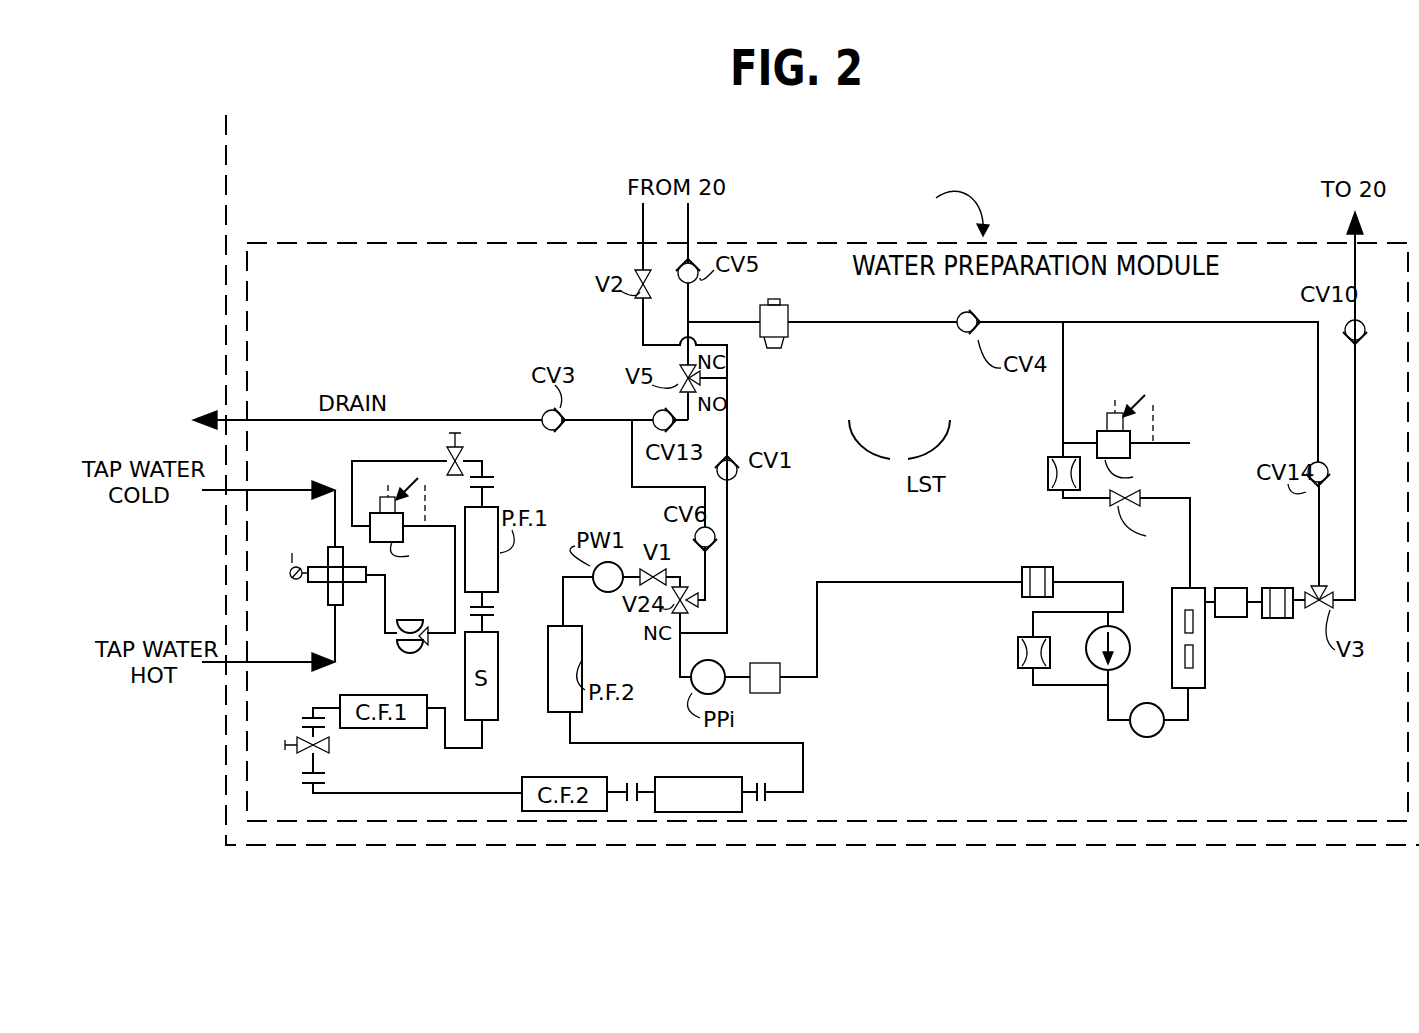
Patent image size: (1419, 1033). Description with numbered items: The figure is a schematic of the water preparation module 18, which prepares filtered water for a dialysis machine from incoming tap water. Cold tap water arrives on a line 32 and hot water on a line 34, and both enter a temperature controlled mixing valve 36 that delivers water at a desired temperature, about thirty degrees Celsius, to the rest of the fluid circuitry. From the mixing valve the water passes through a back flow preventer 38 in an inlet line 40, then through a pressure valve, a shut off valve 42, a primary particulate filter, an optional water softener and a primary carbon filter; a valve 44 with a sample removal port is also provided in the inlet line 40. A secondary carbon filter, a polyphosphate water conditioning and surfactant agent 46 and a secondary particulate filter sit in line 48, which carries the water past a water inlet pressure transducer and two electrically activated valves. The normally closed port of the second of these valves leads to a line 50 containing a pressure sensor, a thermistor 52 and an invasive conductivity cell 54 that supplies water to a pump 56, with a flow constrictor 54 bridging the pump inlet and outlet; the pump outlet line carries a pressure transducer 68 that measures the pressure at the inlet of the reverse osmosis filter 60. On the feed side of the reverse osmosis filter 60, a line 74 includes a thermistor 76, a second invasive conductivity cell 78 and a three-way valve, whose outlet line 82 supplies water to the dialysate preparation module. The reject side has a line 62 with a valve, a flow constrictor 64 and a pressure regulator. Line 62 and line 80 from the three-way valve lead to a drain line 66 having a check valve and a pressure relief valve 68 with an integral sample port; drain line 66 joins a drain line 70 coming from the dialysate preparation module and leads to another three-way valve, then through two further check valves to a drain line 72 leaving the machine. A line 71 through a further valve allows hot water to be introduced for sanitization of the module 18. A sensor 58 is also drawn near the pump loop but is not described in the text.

The water preparation module 18 is at (924, 211).
The line 32 is at (268, 490).
The line 34 is at (318, 665).
The temperature controlled mixing valve 36 is at (328, 556).
The back flow preventer 38 is at (432, 625).
The inlet line 40 is at (455, 594).
The shut off valve 42 is at (448, 447).
The valve 44 is at (325, 745).
The polyphosphate water conditioning and surfactant agent 46 is at (655, 785).
The line 48 is at (805, 772).
The line 50 is at (678, 656).
The thermistor 52 is at (773, 693).
The invasive conductivity cell 54 is at (1040, 567).
The pump 56 is at (1118, 668).
The sensor 58 is at (1148, 738).
The reverse osmosis filter 60 is at (1205, 676).
The line 62 is at (1192, 548).
The flow constrictor 64 is at (1046, 478).
The drain line 66 is at (840, 324).
The pressure relief valve 68 is at (776, 350).
The drain line 70 is at (692, 308).
The line 71 is at (640, 345).
The drain line 72 is at (500, 418).
The line 74 is at (1208, 595).
The thermistor 76 is at (1212, 620).
The second invasive conductivity cell 78 is at (1272, 588).
The line 80 is at (1318, 358).
The outlet line 82 is at (1355, 440).